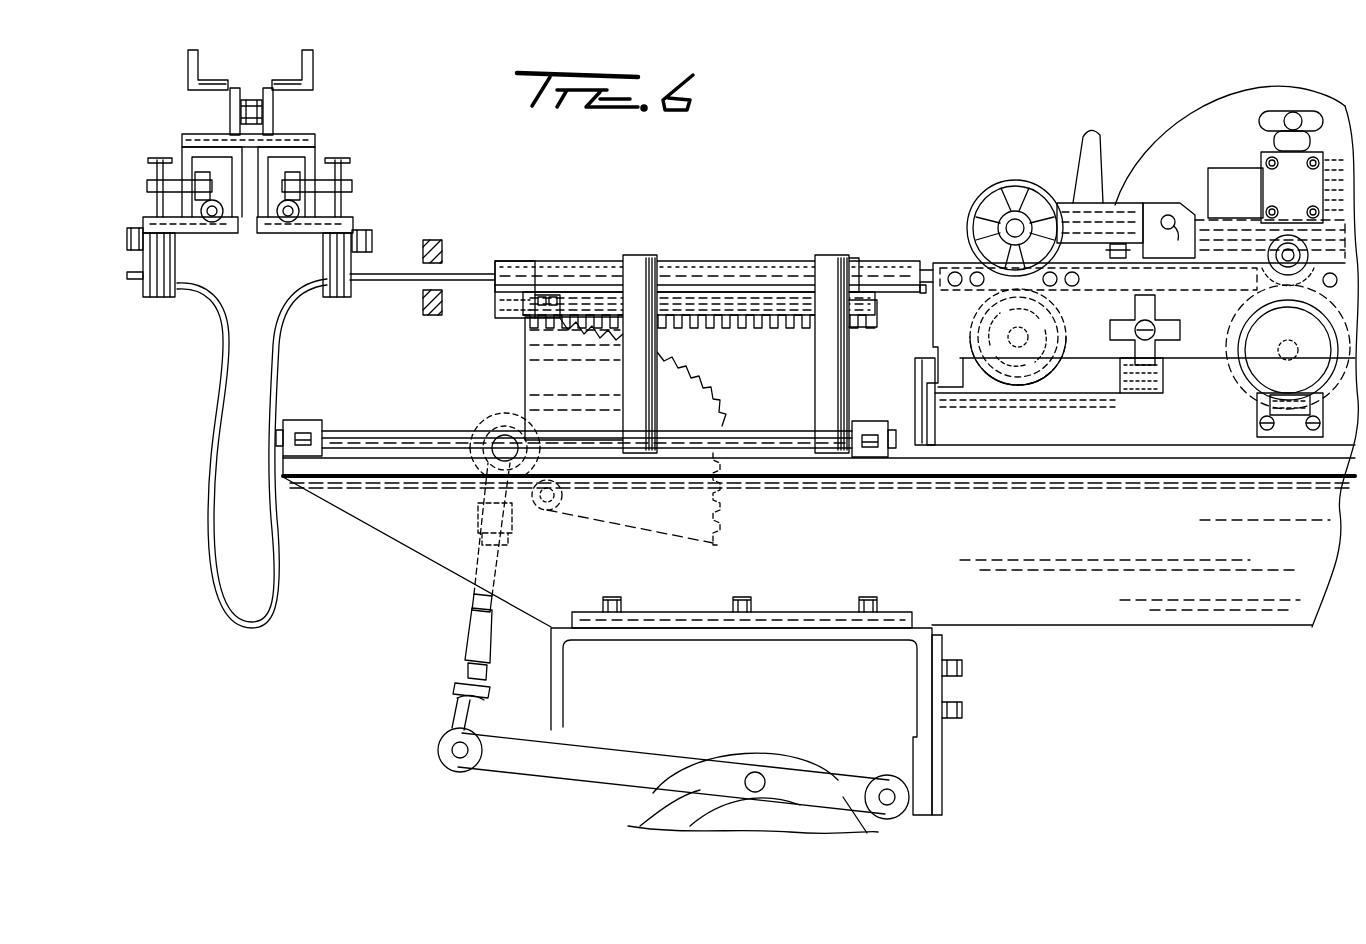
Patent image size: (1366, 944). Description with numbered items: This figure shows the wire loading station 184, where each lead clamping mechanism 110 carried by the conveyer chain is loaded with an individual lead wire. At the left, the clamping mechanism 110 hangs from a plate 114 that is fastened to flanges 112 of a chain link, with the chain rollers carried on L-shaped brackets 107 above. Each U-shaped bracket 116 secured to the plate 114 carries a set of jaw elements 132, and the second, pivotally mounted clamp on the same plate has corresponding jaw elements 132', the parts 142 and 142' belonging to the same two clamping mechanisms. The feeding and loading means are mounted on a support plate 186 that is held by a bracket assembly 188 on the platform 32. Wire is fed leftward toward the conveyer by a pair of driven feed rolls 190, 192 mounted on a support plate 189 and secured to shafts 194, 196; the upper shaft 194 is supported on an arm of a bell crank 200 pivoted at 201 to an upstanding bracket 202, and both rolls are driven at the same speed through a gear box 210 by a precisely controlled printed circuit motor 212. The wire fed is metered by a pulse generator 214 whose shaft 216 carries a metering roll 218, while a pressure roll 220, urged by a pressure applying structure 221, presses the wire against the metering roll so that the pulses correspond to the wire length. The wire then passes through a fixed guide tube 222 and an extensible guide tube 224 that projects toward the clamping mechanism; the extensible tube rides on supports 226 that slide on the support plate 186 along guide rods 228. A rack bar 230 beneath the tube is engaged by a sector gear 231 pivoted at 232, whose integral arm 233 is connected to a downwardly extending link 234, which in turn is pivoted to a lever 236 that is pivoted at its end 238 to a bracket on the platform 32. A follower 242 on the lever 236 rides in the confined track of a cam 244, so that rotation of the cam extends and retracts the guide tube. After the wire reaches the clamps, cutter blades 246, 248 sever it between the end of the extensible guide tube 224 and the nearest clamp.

The platform 32 is at (698, 634).
The L-shaped bracket 107 is at (272, 82).
The lead clamping mechanism 110 is at (279, 332).
The flange 112 is at (222, 130).
The plate 114 is at (318, 144).
The U-shaped bracket 116 is at (183, 152).
The jaw element 132 is at (151, 283).
The jaw element 132' is at (333, 282).
The bar 142 is at (190, 239).
The bar 142' is at (303, 241).
The wire loading station 184 is at (922, 195).
The support plate 186 is at (898, 468).
The bracket assembly 188 is at (417, 534).
The support plate 189 is at (1102, 321).
The feed roll 190 is at (1013, 186).
The feed roll 192 is at (1025, 378).
The shaft 194 is at (1005, 228).
The shaft 196 is at (968, 331).
The bell crank 200 is at (1105, 216).
The pivot 201 is at (1177, 236).
The upstanding bracket 202 is at (1181, 208).
The gear box 210 is at (1247, 208).
The printed circuit motor 212 is at (1254, 102).
The pulse generator 214 is at (1288, 350).
The shaft 216 is at (1303, 341).
The metering roll 218 is at (1244, 389).
The pressure roll 220 is at (1306, 254).
The pressure applying structure 221 is at (1306, 160).
The fixed guide tube 222 is at (920, 294).
The extensible guide tube 224 is at (738, 282).
The support 226 is at (826, 338).
The guide rod 228 is at (778, 438).
The rack bar 230 is at (693, 300).
The sector gear 231 is at (676, 401).
The pivot pin 232 is at (549, 512).
The arm 233 is at (527, 455).
The link 234 is at (477, 633).
The lever 236 is at (622, 763).
The lever end pivot 238 is at (888, 789).
The follower 242 is at (757, 773).
The cam 244 is at (788, 762).
The cutter blade 246 is at (422, 247).
The cutter blade 248 is at (422, 306).